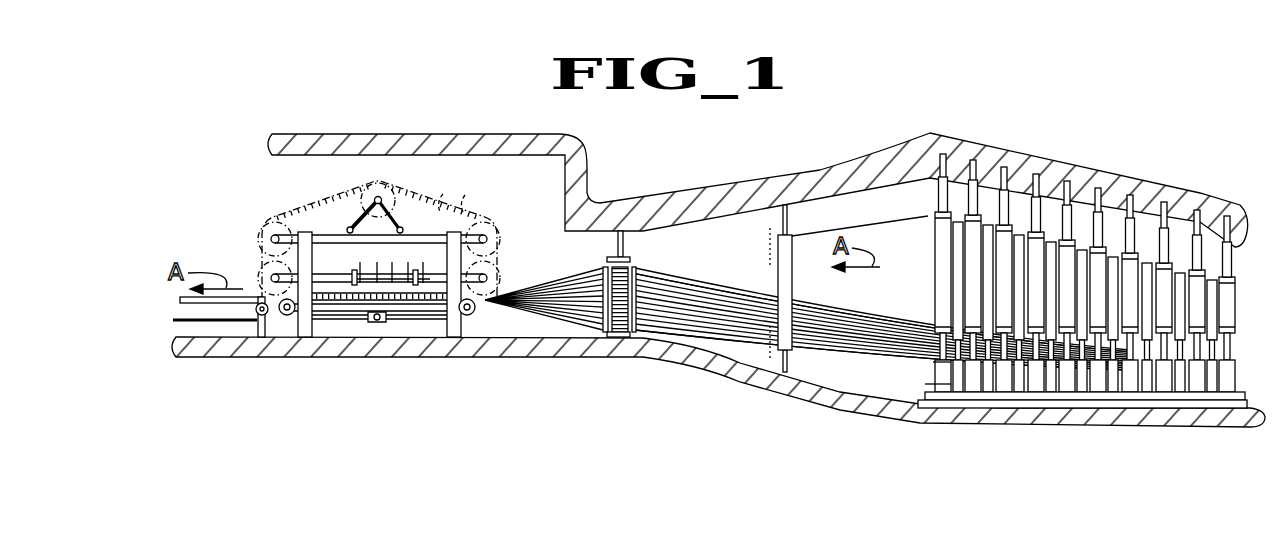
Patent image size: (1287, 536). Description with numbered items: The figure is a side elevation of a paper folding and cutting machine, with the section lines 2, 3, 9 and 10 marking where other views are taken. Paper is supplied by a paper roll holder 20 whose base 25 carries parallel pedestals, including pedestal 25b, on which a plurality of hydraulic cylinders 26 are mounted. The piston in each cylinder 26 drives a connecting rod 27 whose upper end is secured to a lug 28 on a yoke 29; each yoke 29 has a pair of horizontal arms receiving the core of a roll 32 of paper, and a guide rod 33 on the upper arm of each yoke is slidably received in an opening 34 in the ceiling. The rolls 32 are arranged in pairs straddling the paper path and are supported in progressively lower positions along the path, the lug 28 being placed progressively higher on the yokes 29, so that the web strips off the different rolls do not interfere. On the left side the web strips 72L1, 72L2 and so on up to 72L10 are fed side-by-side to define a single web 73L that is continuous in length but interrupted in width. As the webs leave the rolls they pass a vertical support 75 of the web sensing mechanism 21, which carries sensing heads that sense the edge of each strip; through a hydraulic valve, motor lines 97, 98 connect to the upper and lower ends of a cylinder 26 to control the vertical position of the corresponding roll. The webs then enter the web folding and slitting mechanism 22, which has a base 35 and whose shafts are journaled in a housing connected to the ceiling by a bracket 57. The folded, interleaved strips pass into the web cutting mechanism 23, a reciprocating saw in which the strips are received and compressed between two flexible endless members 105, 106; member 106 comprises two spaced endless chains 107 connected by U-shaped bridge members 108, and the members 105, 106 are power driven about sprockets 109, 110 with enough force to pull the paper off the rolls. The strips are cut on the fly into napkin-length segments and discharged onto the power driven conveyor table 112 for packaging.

The section line 2— 2 is at (182, 130).
The section line 3— 3 is at (662, 245).
The section line 9— 9 is at (768, 363).
The section line 10— 10 is at (588, 337).
The paper roll holder 20 is at (1175, 240).
The web sensing mechanism 21 is at (773, 229).
The web folding and slitting mechanism 22 is at (635, 338).
The web cutting mechanism 23 is at (319, 194).
The base 25 is at (1058, 404).
The pedestal 25b is at (1197, 400).
The hydraulic cylinder 26 is at (1198, 373).
The connecting rod 27 is at (1200, 347).
The lug 28 is at (972, 325).
The yoke 29 is at (952, 240).
The roll of paper 32 is at (936, 256).
The guide rod 33 is at (938, 198).
The opening 34 is at (1040, 168).
The base 35 is at (610, 338).
The bracket 57 is at (645, 214).
The web strip 72L1 is at (805, 322).
The web strip 72L2 is at (840, 320).
The web strip 72L10 is at (862, 322).
The web 73L is at (847, 229).
The vertical support 75 is at (778, 283).
The motor line 97 is at (933, 365).
The motor line 98 is at (928, 387).
The flexible endless member 105 is at (373, 322).
The flexible endless member 106 is at (422, 197).
The endless chain 107 is at (330, 196).
The U-shaped bridge member 108 is at (463, 212).
The sprocket 109 is at (472, 314).
The sprocket 110 is at (259, 256).
The power driven conveyor table 112 is at (178, 298).